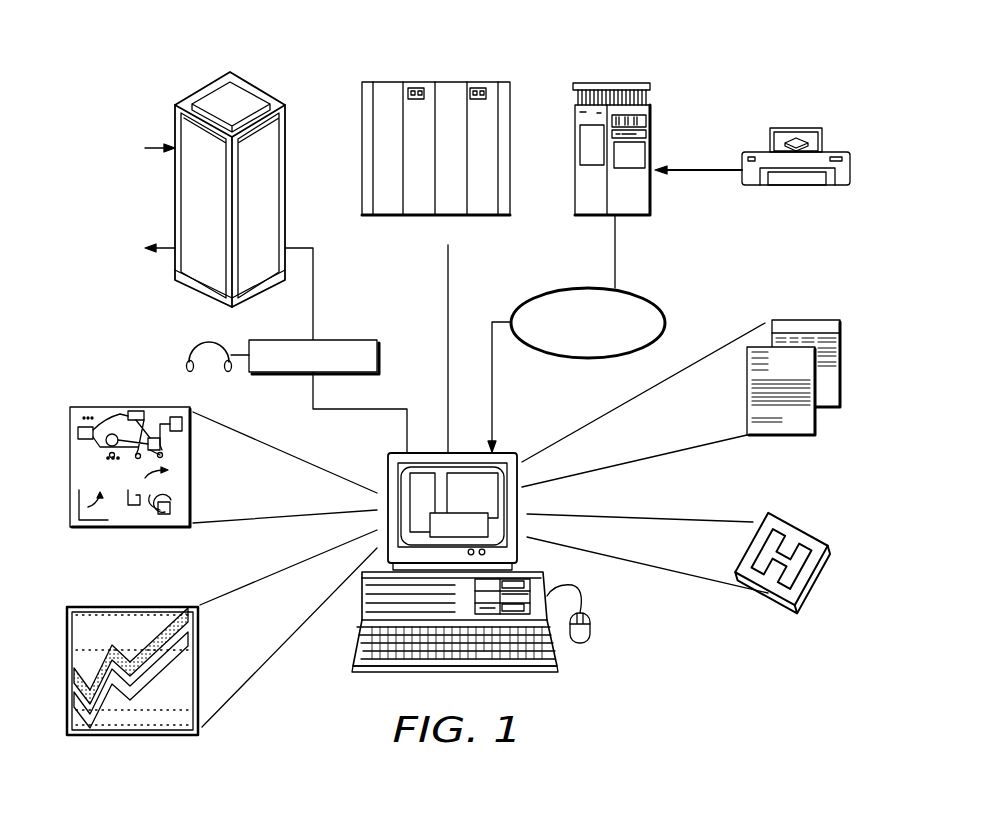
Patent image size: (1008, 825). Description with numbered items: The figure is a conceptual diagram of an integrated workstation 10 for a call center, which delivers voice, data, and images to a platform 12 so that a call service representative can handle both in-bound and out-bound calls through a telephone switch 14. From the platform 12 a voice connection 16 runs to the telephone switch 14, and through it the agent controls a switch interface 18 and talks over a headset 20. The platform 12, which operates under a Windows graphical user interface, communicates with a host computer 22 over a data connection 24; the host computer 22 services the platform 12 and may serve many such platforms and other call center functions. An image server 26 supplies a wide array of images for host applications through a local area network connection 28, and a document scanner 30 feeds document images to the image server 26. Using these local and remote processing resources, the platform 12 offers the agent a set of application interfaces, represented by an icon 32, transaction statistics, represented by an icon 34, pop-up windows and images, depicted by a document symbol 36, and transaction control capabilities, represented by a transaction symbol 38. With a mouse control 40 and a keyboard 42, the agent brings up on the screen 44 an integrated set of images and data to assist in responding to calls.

The integrated workstation 10 is at (741, 54).
The platform 12 is at (492, 467).
The telephone switch 14 is at (253, 82).
The voice connection 16 is at (300, 247).
The switch interface 18 is at (300, 373).
The headset 20 is at (188, 350).
The host computer 22 is at (482, 80).
The data connection 24 is at (448, 283).
The image server 26 is at (652, 127).
The local area network (LAN) connection 28 is at (643, 292).
The document scanner 30 is at (834, 152).
The icon 32 is at (190, 466).
The icon 34 is at (198, 668).
The document symbol 36 is at (728, 401).
The transaction symbol 38 is at (711, 556).
The mouse control 40 is at (595, 628).
The keyboard 42 is at (557, 650).
The screen 44 is at (542, 503).